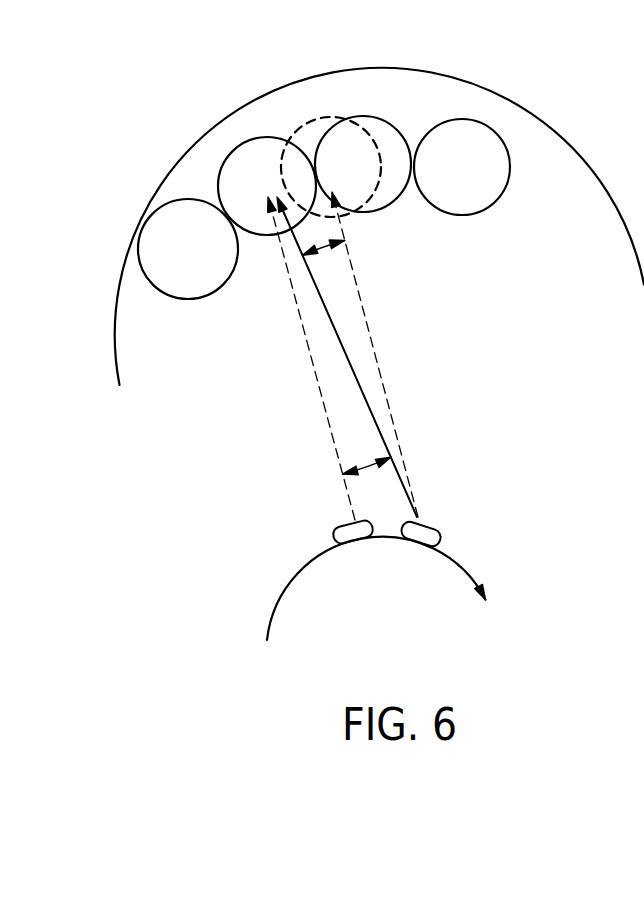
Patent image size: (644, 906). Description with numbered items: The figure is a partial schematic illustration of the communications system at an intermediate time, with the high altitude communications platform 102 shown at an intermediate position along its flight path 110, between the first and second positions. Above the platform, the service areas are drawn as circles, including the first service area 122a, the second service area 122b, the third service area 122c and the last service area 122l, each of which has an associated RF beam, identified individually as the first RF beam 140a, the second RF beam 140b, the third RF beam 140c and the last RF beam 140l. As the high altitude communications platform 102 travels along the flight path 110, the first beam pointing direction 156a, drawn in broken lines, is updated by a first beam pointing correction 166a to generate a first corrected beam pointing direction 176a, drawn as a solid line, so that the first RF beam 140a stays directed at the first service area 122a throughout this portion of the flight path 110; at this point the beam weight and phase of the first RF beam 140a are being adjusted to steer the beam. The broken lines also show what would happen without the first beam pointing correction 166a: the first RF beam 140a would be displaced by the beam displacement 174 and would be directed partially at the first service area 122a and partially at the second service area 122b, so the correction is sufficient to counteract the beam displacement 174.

The high altitude communications platform 102 is at (340, 520).
The flight path 110 is at (470, 577).
The first service area 122a is at (228, 153).
The second service area 122b is at (362, 116).
The third service area 122c is at (461, 118).
The twelfth service area 122l is at (130, 250).
The first RF beam 140a is at (283, 193).
The second RF beam 140b is at (380, 175).
The third RF beam 140c is at (491, 177).
The twelfth RF beam 140l is at (213, 262).
The first beam pointing direction 156a is at (316, 371).
The first beam pointing correction 166a is at (365, 476).
The beam displacement 174 is at (320, 254).
The first corrected beam pointing direction 176a is at (348, 358).